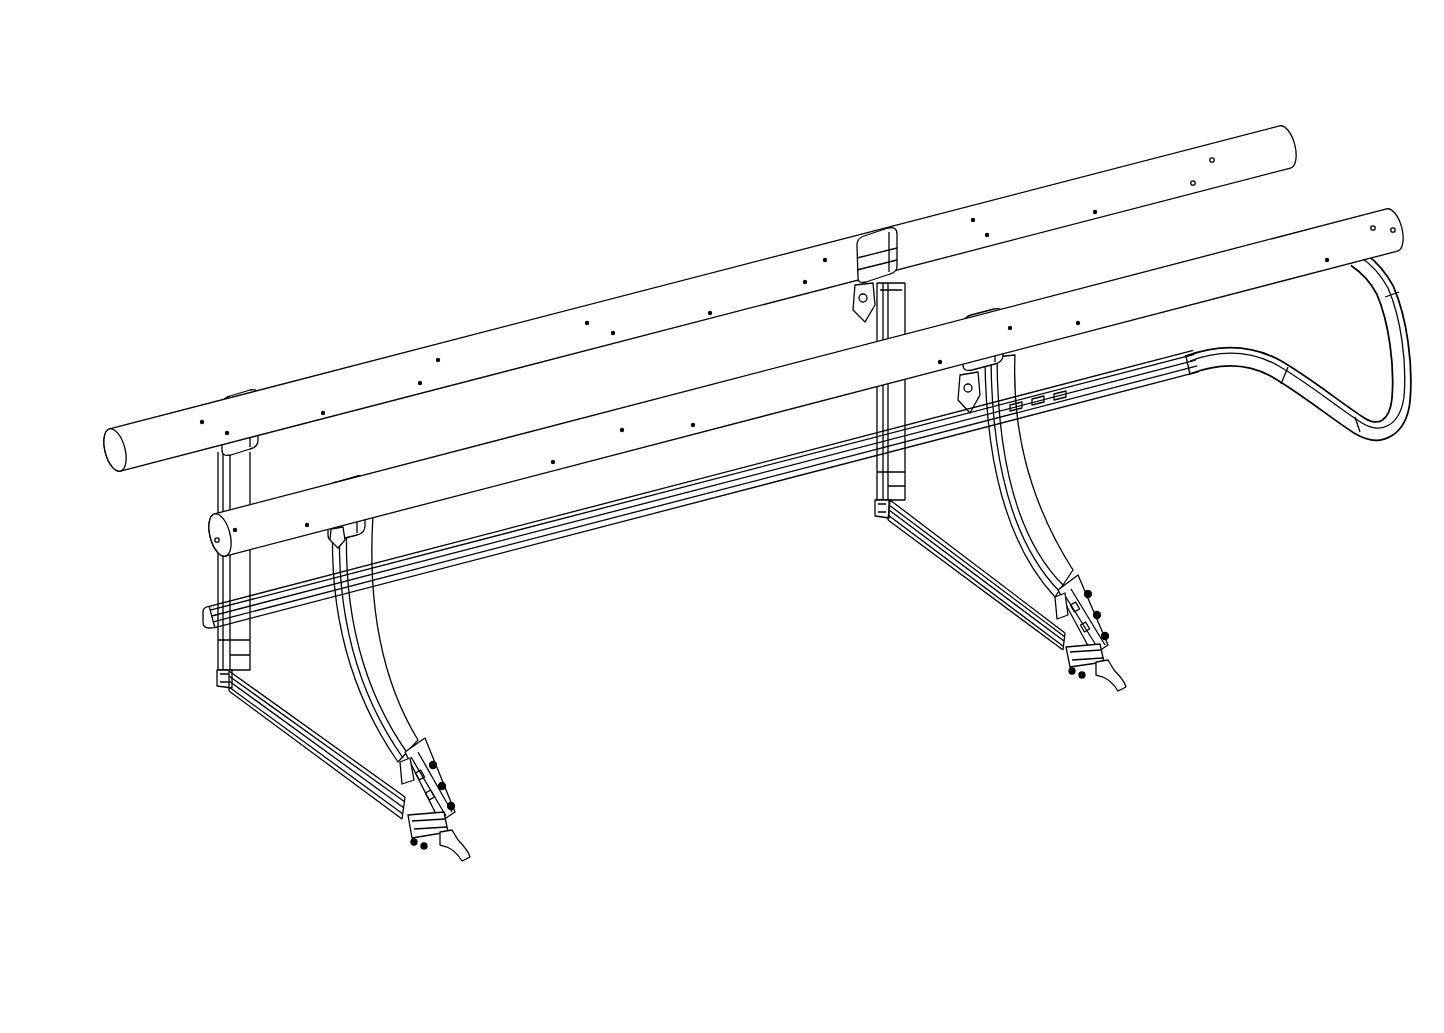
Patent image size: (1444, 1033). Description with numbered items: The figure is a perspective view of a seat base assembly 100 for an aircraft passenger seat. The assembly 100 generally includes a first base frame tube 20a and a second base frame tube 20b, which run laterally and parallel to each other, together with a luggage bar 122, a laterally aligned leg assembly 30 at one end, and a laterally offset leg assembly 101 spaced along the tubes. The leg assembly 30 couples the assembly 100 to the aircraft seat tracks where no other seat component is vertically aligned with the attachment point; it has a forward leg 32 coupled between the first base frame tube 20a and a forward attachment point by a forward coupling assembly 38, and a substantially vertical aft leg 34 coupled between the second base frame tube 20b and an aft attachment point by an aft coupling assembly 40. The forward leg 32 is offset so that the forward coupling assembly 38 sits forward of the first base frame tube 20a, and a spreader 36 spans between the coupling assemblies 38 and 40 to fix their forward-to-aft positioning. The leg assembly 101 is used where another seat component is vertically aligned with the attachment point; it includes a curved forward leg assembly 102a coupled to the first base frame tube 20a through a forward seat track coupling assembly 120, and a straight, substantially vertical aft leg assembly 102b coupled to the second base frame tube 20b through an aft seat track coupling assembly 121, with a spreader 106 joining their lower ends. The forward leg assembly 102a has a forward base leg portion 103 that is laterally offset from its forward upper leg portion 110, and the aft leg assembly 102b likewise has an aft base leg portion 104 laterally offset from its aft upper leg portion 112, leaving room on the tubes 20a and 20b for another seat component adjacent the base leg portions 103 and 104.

The seat base assembly 100 is at (1360, 112).
The first base frame tube 20a is at (652, 410).
The second base frame tube 20b is at (672, 295).
The laterally aligned leg assembly 30 is at (250, 707).
The forward leg 32 is at (372, 650).
The aft leg 34 is at (238, 482).
The spreader 36 is at (330, 757).
The forward coupling assembly 38 is at (462, 826).
The aft coupling assembly 40 is at (216, 683).
The laterally offset leg assembly 101 is at (1006, 622).
The forward leg assembly 102a is at (1060, 495).
The aft leg assembly 102b is at (865, 410).
The forward base leg portion 103 is at (1050, 525).
The aft base leg portion 104 is at (898, 328).
The spreader 106 is at (968, 570).
The forward upper leg portion 110 is at (990, 318).
The aft upper leg portion 112 is at (875, 228).
The forward seat track coupling assembly 120 is at (1120, 655).
The aft seat track coupling assembly 121 is at (876, 522).
The luggage bar 122 is at (1313, 400).